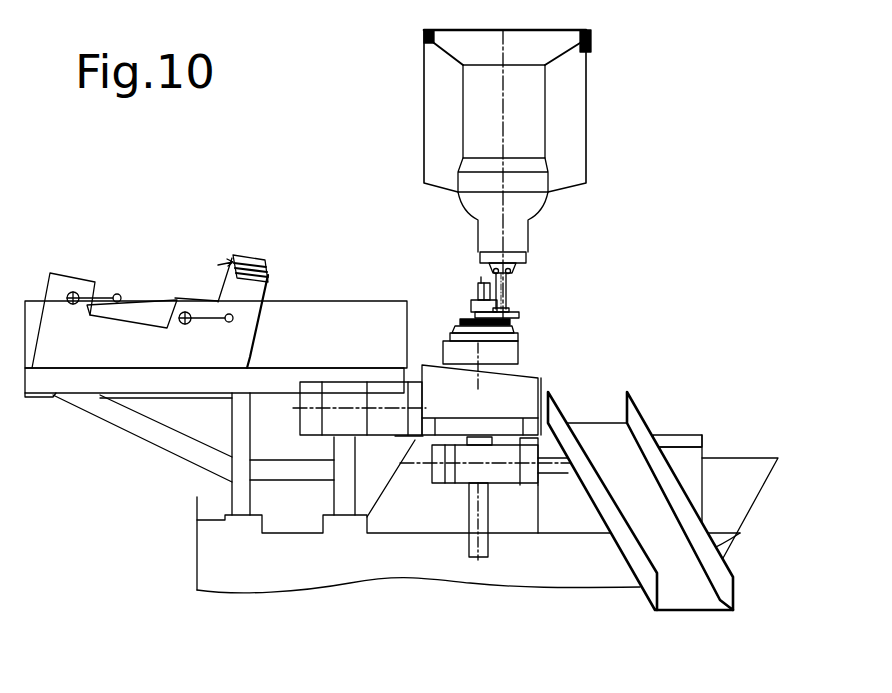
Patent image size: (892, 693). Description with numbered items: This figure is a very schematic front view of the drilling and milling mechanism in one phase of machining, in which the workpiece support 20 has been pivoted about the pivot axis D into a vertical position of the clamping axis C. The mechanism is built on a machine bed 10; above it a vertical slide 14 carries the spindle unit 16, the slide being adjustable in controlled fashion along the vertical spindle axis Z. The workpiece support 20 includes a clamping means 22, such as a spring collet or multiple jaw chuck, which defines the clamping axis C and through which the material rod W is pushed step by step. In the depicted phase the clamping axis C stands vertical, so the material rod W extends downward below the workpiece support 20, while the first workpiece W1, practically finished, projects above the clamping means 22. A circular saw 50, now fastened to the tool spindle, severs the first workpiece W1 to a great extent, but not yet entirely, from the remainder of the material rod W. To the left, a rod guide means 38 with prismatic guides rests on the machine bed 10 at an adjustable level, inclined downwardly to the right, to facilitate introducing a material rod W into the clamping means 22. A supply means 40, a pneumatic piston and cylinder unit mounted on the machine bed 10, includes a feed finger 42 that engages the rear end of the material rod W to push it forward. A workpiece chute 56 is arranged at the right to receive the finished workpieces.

The machine bed 10 is at (413, 584).
The vertical slide 14 is at (437, 78).
The spindle unit 16 is at (483, 108).
The workpiece support 20 is at (516, 336).
The clamping means 22 is at (521, 315).
The rod guide means 38 is at (120, 337).
The supply means 40 is at (325, 312).
The feed finger 42 is at (250, 355).
The circular saw 50 is at (501, 311).
The workpiece chute 56 is at (673, 595).
The spindle axis Z is at (502, 132).
The pivot axis D is at (478, 340).
The clamping axis C is at (480, 562).
The material rod W is at (486, 546).
The first workpiece W1 is at (471, 293).